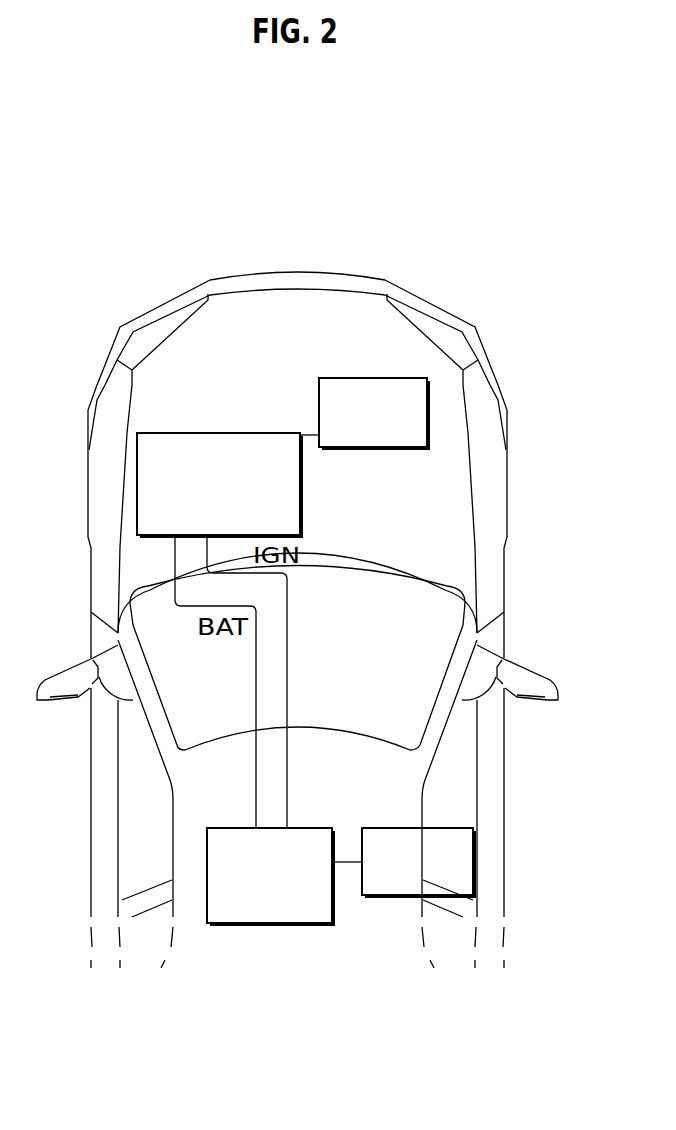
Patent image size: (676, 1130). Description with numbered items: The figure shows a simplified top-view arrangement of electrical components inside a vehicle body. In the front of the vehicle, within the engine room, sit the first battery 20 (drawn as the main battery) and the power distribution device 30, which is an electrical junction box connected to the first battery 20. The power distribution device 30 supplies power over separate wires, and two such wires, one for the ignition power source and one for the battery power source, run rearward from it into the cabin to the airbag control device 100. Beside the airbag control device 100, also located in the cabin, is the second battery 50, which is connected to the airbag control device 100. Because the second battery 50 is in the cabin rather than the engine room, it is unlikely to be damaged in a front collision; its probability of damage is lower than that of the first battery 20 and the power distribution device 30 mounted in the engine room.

The first battery 20 is at (362, 377).
The power distribution device 30 is at (137, 472).
The second battery 50 is at (460, 827).
The airbag control device 100 is at (313, 827).